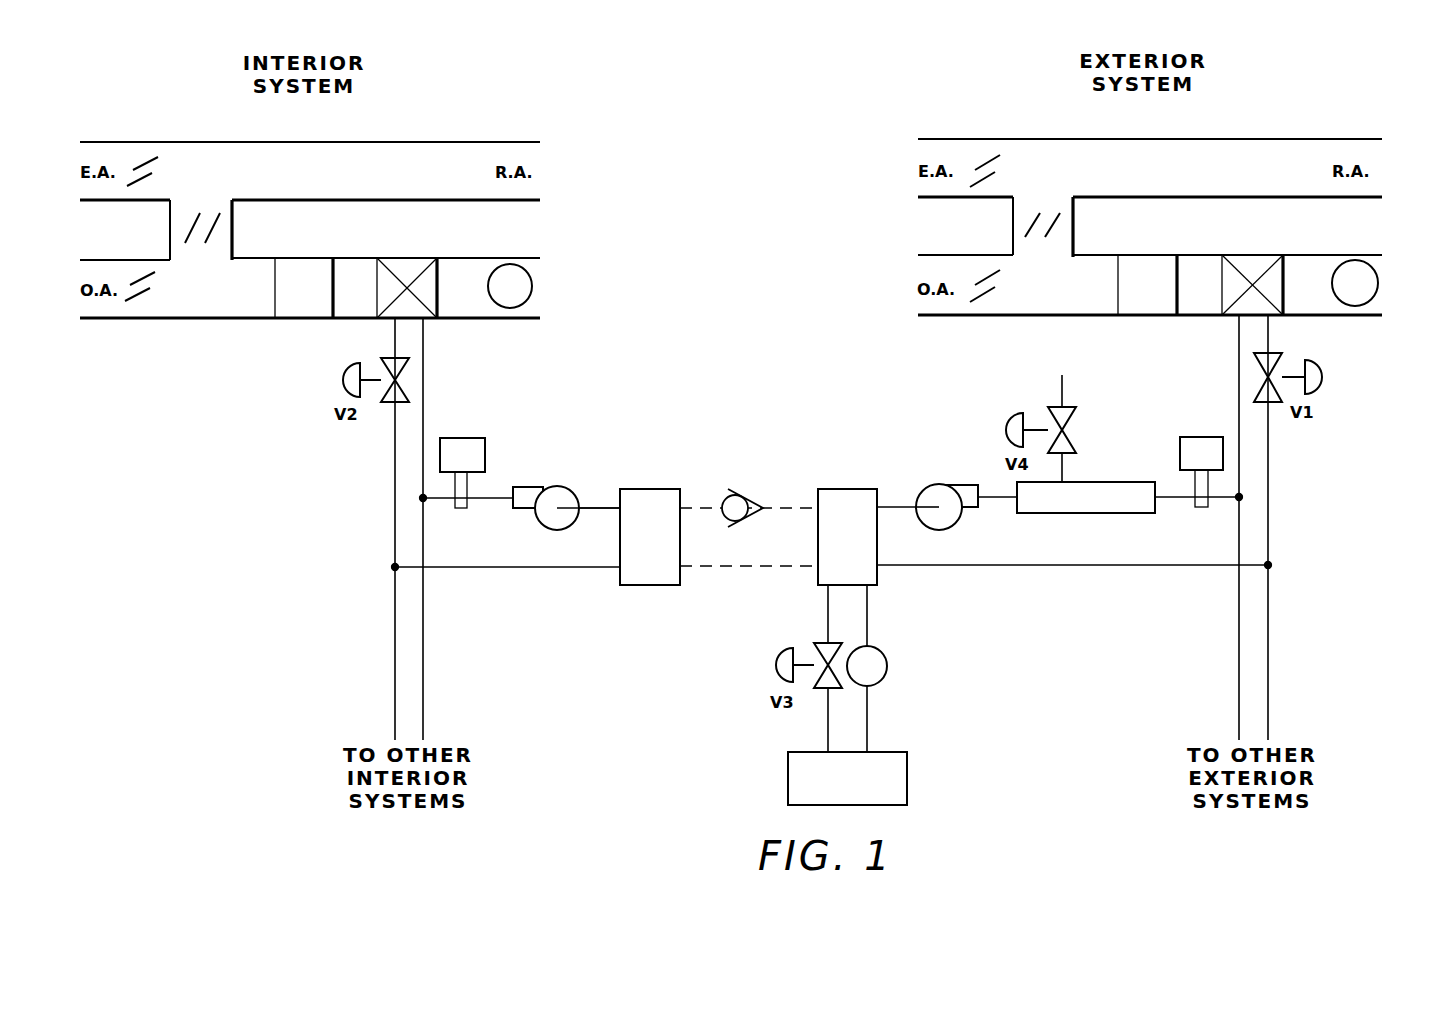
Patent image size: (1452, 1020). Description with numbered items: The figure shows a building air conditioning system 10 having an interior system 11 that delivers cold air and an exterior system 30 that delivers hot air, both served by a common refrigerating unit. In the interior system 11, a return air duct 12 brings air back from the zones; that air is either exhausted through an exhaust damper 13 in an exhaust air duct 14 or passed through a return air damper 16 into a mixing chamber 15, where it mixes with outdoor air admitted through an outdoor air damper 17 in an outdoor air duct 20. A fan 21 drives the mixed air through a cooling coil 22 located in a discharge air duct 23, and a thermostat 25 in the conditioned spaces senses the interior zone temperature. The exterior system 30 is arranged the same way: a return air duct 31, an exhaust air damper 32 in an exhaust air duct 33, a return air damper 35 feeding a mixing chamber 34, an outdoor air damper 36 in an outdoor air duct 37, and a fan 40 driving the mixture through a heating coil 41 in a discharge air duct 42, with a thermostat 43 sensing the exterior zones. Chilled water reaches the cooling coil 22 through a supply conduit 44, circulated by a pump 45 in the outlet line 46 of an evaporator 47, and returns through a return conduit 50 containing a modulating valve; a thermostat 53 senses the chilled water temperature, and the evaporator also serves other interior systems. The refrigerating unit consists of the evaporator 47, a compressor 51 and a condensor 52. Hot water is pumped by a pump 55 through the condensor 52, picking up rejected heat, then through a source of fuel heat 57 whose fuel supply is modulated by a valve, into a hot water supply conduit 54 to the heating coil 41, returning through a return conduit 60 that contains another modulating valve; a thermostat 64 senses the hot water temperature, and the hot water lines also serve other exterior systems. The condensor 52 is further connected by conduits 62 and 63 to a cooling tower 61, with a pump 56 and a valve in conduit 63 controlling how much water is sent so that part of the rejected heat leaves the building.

The air conditioning system 10 is at (790, 346).
The interior system 11 is at (408, 137).
The return air duct 12 is at (520, 142).
The exhaust damper 13 is at (148, 163).
The exhaust air duct 14 is at (118, 142).
The mixing chamber 15 is at (228, 300).
The return air damper 16 is at (212, 207).
The outdoor air damper 17 is at (150, 292).
The outdoor air duct 20 is at (97, 260).
The fan 21 is at (303, 318).
The cooling coil 22 is at (410, 262).
The discharge air duct 23 is at (512, 318).
The thermostat 25 is at (532, 286).
The exterior system 30 is at (1227, 133).
The return air duct 31 is at (1320, 137).
The exhaust air damper 32 is at (990, 160).
The exhaust air duct 33 is at (945, 139).
The mixing chamber 34 is at (1072, 300).
The return air damper 35 is at (1053, 213).
The outdoor air damper 36 is at (990, 293).
The outdoor air duct 37 is at (938, 255).
The fan 40 is at (1135, 257).
The heating coil 41 is at (1245, 260).
The discharge air duct 42 is at (1337, 253).
The thermostat 43 is at (1367, 302).
The supply conduit 44 is at (423, 362).
The pump 45 is at (537, 487).
The outlet line 46 is at (598, 500).
The evaporator 47 is at (662, 489).
The return conduit 50 is at (393, 513).
The compressor 51 is at (743, 520).
The condensor 52 is at (852, 489).
The thermostat 53 is at (462, 438).
The hot water supply conduit 54 is at (1237, 353).
The pump 55 is at (937, 484).
The pump 56 is at (887, 665).
The source of fuel heat 57 is at (1133, 482).
The return conduit 60 is at (1270, 520).
The cooling tower 61 is at (907, 770).
The conduit 62 is at (869, 612).
The conduit 63 is at (826, 605).
The thermostat 64 is at (1205, 437).